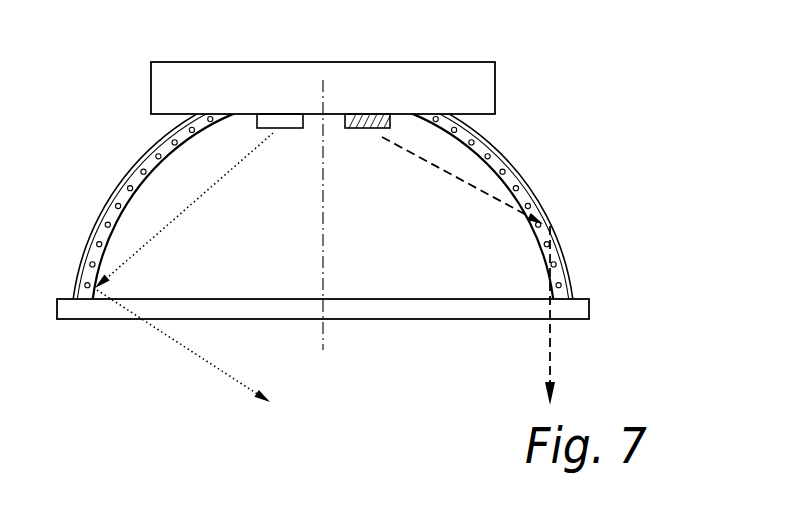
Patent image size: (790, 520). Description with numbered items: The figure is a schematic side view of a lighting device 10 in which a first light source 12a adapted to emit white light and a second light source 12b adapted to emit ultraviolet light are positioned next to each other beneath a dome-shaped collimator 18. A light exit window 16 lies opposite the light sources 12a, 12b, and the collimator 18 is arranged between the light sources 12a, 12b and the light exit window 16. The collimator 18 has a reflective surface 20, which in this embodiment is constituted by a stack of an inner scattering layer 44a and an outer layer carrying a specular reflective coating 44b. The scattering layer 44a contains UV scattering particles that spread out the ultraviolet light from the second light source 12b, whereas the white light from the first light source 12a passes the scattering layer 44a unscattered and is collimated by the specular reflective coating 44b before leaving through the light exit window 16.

The lighting device 10 is at (640, 93).
The first light source 12a is at (358, 122).
The second light source 12b is at (272, 120).
The light exit window 16 is at (589, 310).
The collimator 18 is at (528, 160).
The reflective surface 20 is at (323, 197).
The inner scattering layer 44a is at (461, 143).
The specular reflective coating 44b is at (572, 258).